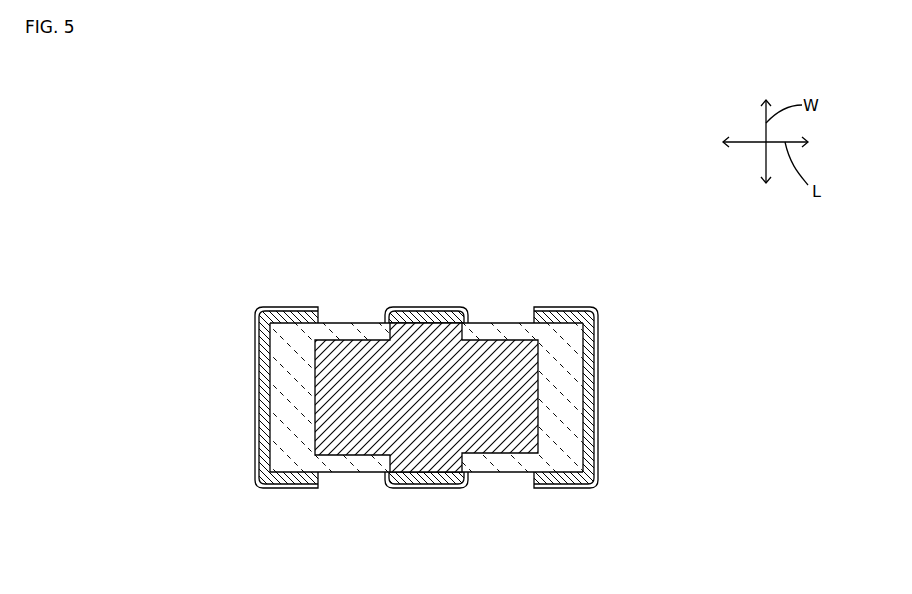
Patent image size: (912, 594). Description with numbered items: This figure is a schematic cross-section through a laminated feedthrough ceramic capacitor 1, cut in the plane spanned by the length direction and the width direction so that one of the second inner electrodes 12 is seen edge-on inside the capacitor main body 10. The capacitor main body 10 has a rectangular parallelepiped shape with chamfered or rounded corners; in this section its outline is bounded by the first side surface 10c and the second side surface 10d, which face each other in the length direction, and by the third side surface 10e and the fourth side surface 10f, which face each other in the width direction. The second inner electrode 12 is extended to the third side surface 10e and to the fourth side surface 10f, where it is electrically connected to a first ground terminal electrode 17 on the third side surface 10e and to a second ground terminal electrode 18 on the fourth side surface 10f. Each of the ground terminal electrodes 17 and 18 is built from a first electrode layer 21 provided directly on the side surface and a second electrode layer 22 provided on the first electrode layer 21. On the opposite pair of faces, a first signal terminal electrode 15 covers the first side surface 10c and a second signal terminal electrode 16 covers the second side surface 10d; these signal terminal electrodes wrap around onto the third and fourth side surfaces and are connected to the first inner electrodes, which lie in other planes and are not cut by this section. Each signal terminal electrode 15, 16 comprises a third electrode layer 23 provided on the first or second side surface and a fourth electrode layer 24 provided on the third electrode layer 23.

The laminated feedthrough ceramic capacitor 1 is at (620, 289).
The capacitor main body 10 is at (511, 321).
The first side surface 10c is at (267, 448).
The second side surface 10d is at (588, 453).
The third side surface 10e is at (340, 321).
The fourth side surface 10f is at (345, 473).
The second inner electrode 12 is at (502, 456).
The first signal terminal electrode 15 is at (256, 364).
The second signal terminal electrode 16 is at (599, 362).
The first ground terminal electrode 17 is at (423, 308).
The second ground terminal electrode 18 is at (421, 489).
The first electrode layer 21 is at (431, 318).
The second electrode layer 22 is at (450, 318).
The third electrode layer 23 is at (597, 384).
The fourth electrode layer 24 is at (599, 410).